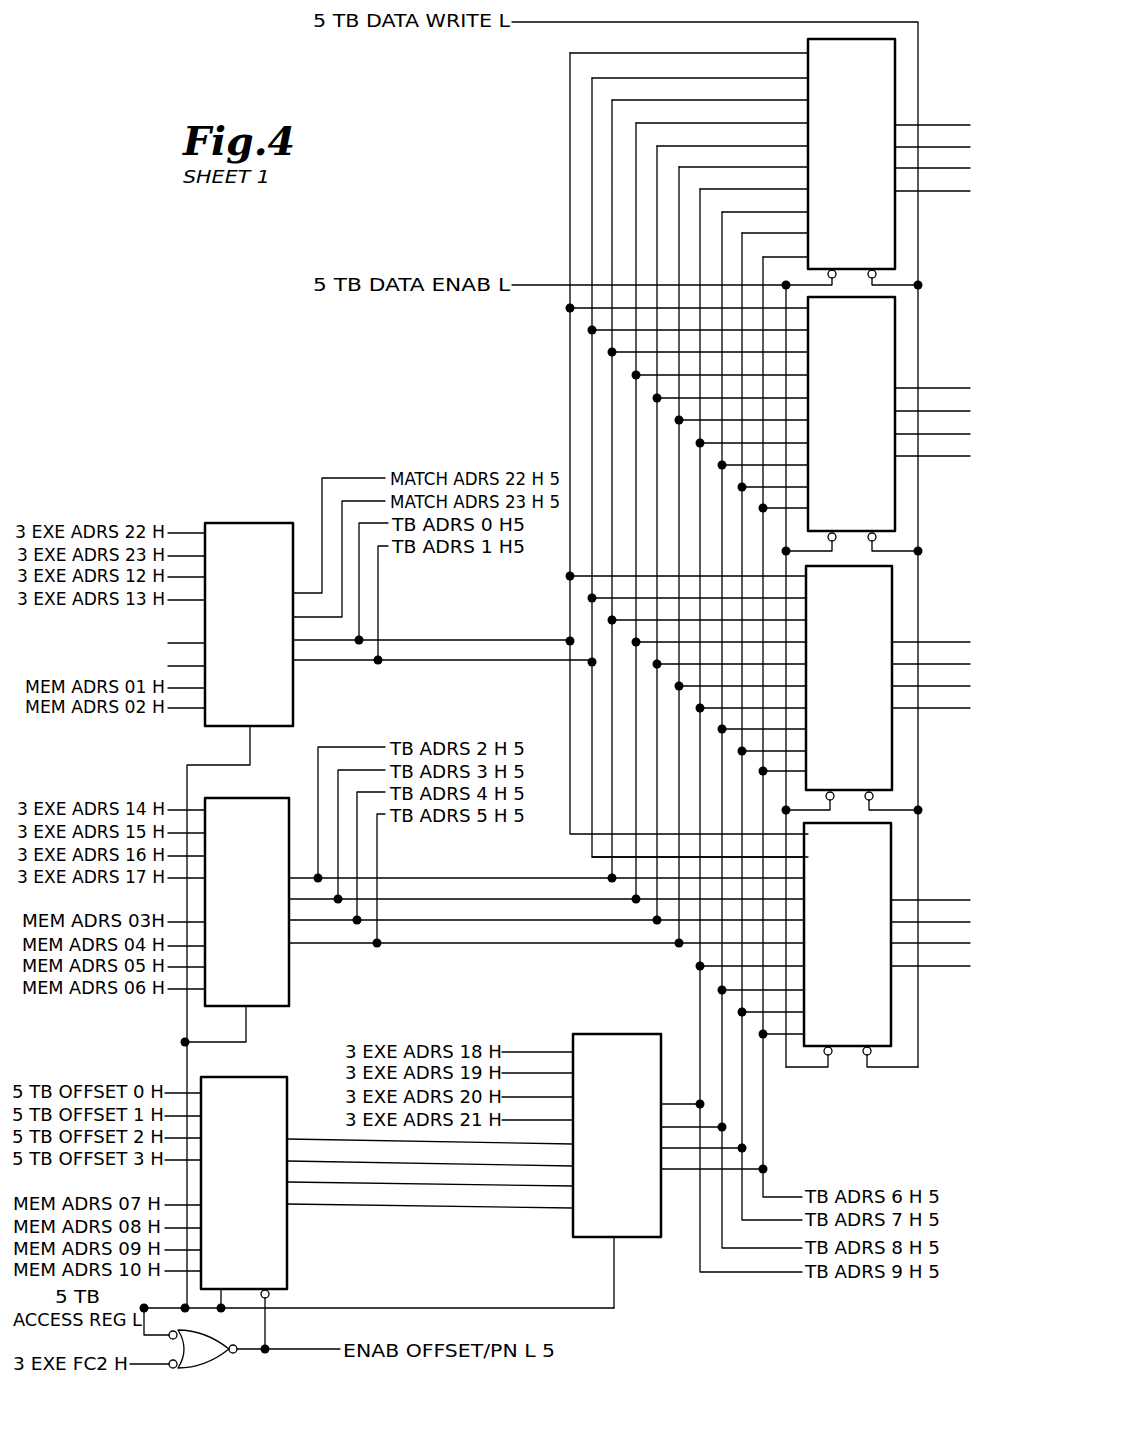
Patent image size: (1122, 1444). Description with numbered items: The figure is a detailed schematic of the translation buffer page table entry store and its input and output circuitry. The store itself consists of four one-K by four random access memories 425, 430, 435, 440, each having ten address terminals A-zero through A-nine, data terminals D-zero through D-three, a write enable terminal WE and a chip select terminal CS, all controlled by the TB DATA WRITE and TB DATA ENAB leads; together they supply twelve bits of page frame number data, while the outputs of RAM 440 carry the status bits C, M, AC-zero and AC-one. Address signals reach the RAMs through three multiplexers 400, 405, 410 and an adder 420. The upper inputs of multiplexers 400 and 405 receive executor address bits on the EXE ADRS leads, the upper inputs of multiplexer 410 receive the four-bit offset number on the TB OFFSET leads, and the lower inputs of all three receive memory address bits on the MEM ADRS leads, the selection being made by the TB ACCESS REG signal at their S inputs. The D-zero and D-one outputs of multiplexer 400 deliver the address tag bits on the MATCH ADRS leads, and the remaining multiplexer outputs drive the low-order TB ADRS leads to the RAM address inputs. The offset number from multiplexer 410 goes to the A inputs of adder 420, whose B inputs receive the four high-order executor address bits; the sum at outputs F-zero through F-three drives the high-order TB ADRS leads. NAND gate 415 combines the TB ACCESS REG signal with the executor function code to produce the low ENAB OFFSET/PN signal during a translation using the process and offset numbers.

The multiplexer 400 is at (250, 519).
The multiplexer 405 is at (262, 794).
The multiplexer 410 is at (258, 1073).
The NAND gate 415 is at (212, 1369).
The adder 420 is at (623, 1031).
The 1K×4 RAM 425 is at (895, 228).
The 1K×4 RAM 430 is at (895, 500).
The 1K×4 RAM 435 is at (892, 746).
The 1K×4 RAM 440 is at (891, 1004).